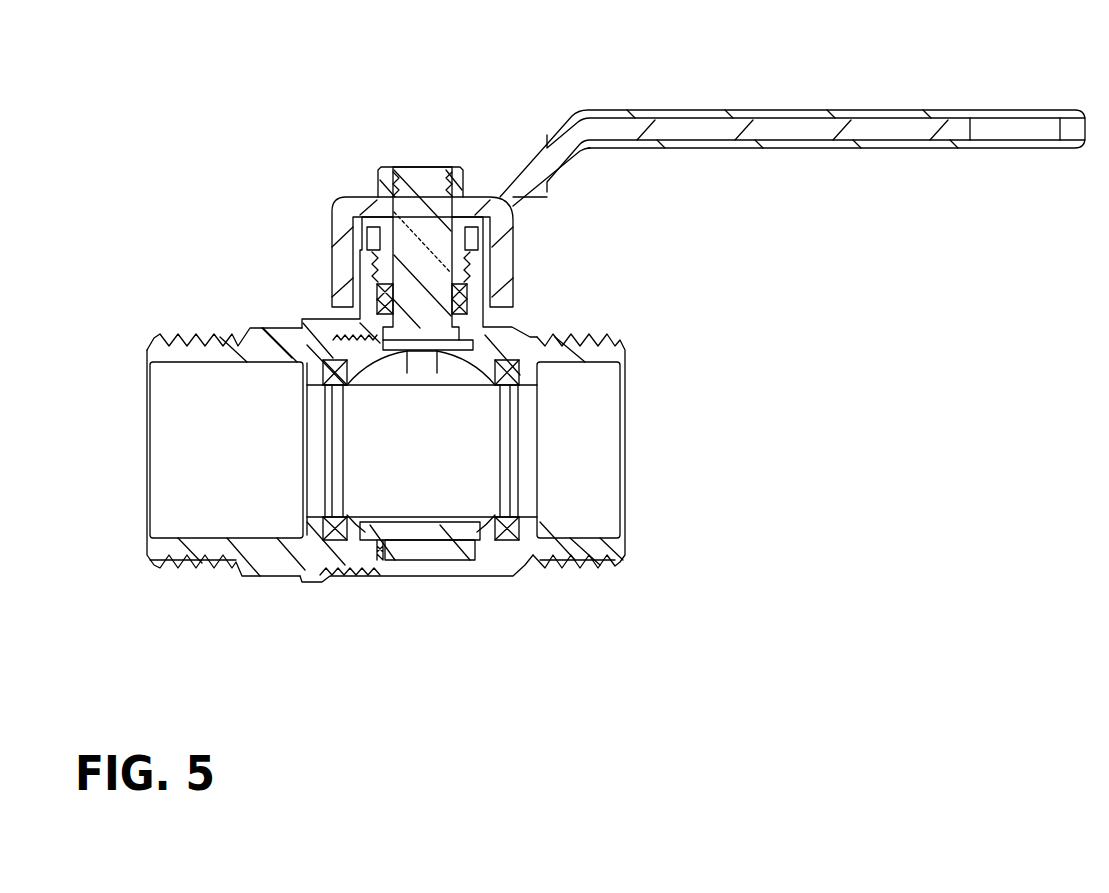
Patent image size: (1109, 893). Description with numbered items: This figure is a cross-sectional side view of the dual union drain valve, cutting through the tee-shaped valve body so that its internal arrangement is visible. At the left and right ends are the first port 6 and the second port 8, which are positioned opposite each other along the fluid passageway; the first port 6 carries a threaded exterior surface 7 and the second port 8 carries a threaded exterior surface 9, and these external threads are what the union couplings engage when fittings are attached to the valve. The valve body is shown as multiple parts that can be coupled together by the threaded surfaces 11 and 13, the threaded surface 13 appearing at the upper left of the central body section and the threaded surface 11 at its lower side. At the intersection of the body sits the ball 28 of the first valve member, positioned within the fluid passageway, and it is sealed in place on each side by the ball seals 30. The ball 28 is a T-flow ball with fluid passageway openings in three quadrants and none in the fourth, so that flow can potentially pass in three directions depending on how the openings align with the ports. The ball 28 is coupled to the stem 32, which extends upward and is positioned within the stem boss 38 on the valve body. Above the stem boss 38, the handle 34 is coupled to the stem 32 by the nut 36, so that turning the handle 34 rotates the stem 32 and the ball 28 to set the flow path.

The first port 6 is at (147, 404).
The threaded exterior surface 7 is at (213, 567).
The second port 8 is at (622, 435).
The threaded exterior surface 9 is at (585, 562).
The threaded surface 11 is at (372, 577).
The threaded surface 13 is at (328, 330).
The ball 28 is at (472, 372).
The ball seals 30 is at (518, 343).
The stem 32 is at (423, 185).
The handle 34 is at (800, 105).
The nut 36 is at (467, 176).
The stem boss 38 is at (470, 318).